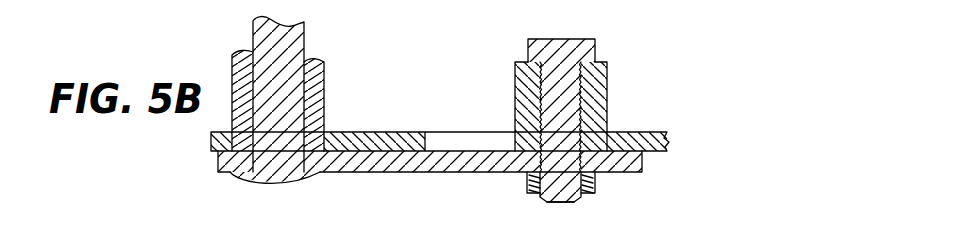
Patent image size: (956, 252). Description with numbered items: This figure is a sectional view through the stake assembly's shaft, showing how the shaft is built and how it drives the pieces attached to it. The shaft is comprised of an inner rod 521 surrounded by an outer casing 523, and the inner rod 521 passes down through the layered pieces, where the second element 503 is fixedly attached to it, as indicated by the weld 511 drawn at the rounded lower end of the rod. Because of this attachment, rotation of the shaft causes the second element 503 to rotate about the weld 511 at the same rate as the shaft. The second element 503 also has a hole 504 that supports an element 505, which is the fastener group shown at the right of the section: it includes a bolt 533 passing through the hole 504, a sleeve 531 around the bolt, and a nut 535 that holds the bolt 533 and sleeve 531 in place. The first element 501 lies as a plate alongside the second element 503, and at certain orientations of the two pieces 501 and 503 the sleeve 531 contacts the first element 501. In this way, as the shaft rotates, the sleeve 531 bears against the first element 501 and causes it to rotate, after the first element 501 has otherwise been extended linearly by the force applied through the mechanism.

The first element 501 is at (619, 132).
The second element 503 is at (472, 174).
The hole 504 is at (597, 168).
The element 505 is at (591, 113).
The weld 511 is at (265, 186).
The inner rod 521 is at (305, 43).
The outer casing 523 is at (325, 100).
The sleeve 531 is at (607, 82).
The bolt 533 is at (562, 39).
The nut 535 is at (588, 194).